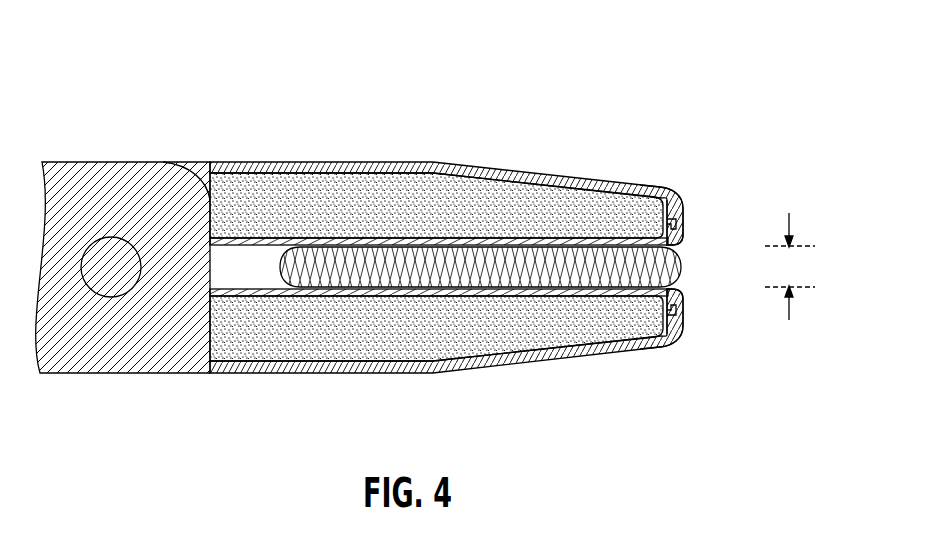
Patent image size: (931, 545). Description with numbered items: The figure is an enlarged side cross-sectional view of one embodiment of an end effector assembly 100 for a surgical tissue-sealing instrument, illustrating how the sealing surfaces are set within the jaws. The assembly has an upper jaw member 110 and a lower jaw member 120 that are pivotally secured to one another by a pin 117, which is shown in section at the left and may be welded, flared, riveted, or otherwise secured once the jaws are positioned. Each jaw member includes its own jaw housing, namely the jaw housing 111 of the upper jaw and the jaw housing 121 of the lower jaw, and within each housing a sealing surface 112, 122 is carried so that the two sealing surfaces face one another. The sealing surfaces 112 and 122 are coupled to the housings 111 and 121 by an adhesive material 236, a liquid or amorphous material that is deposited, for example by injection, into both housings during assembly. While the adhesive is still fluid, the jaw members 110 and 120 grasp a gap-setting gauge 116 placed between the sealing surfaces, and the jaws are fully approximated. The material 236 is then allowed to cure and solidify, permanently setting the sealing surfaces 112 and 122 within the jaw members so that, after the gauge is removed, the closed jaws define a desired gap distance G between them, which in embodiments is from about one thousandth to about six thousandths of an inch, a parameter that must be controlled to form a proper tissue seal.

The end effector assembly 100 is at (425, 236).
The jaw member 110 is at (683, 213).
The jaw housing 111 is at (572, 177).
The sealing surface 112 is at (473, 240).
The gap-setting gauge 116 is at (680, 267).
The pin 117 is at (110, 262).
The jaw member 120 is at (683, 320).
The jaw housing 121 is at (572, 350).
The sealing surface 122 is at (473, 292).
The adhesive material 236 is at (315, 200).
The gap distance G is at (790, 266).